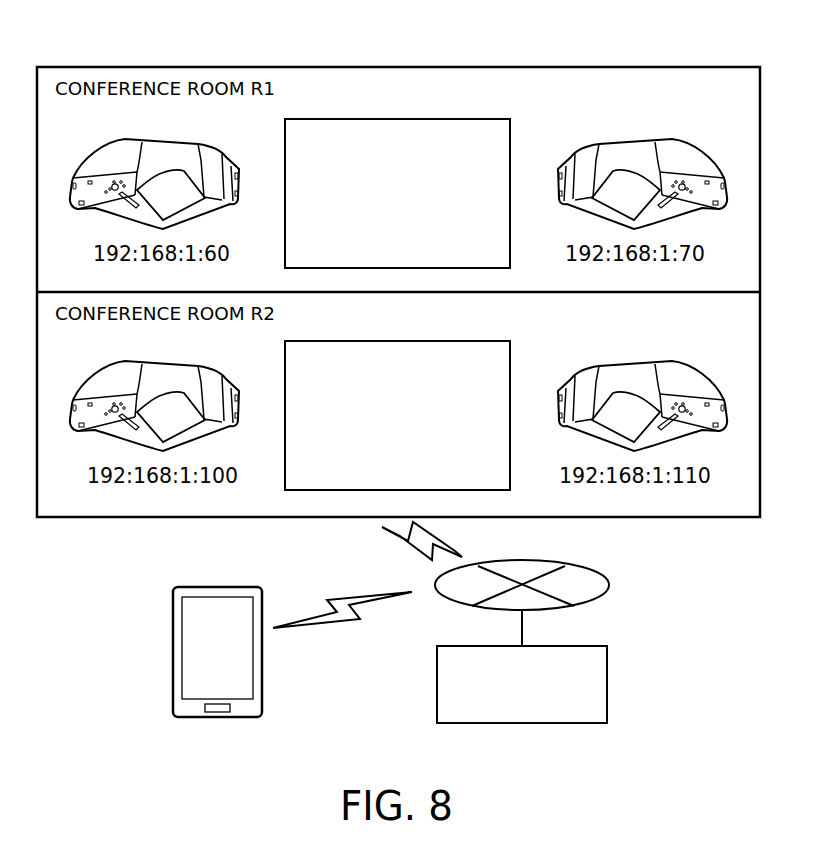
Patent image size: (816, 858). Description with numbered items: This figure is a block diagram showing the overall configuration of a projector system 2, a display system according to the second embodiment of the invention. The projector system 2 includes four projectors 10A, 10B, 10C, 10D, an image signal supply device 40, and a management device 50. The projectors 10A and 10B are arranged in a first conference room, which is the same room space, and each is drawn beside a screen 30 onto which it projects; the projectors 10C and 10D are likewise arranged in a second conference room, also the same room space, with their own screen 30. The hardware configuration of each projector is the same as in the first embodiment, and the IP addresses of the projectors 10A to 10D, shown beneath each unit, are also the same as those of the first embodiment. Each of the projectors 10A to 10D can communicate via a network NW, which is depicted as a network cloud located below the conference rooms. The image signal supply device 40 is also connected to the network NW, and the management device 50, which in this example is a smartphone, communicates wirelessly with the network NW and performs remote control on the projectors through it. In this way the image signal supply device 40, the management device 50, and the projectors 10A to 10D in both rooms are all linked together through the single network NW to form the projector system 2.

The projector system 2 is at (684, 626).
The projector 10A is at (205, 147).
The projector 10B is at (593, 147).
The projector 10C is at (205, 369).
The projector 10D is at (593, 369).
The screen 30 is at (423, 118).
The image signal supply device 40 is at (607, 661).
The management device 50 is at (207, 586).
The network NW is at (606, 577).